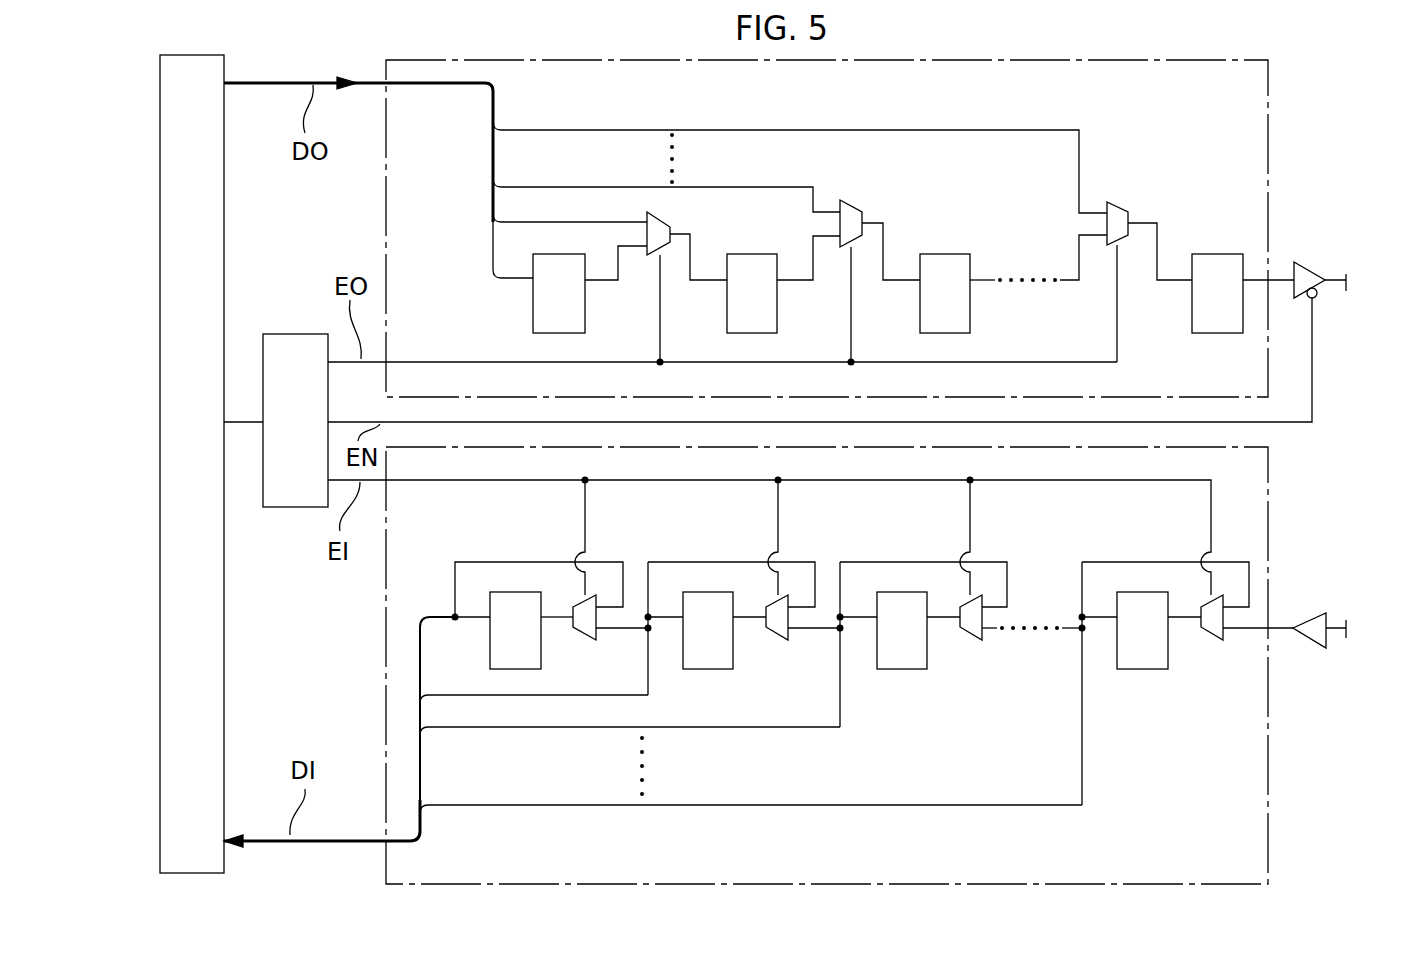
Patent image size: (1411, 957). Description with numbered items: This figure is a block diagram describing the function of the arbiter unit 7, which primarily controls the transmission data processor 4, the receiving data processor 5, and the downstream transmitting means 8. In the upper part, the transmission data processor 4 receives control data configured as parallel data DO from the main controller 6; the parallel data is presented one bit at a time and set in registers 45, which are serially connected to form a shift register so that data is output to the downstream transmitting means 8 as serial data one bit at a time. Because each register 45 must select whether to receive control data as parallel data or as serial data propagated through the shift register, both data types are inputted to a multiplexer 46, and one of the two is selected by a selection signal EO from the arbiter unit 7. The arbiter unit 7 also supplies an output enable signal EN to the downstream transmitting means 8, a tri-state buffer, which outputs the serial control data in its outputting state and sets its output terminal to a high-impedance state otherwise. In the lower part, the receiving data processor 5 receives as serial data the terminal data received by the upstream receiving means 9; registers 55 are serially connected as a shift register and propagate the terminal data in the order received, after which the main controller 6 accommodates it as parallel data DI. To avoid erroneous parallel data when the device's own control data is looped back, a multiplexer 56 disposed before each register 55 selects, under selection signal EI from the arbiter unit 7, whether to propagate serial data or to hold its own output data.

The transmission data processor 4 is at (1269, 146).
The receiving data processor 5 is at (1268, 512).
The main controller 6 is at (226, 71).
The arbiter unit 7 is at (298, 334).
The downstream transmitting means 8 is at (1308, 266).
The upstream receiving means 9 is at (1306, 614).
The register 45 is at (533, 312).
The multiplexer 46 is at (666, 217).
The register 55 is at (490, 634).
The multiplexer 56 is at (585, 641).